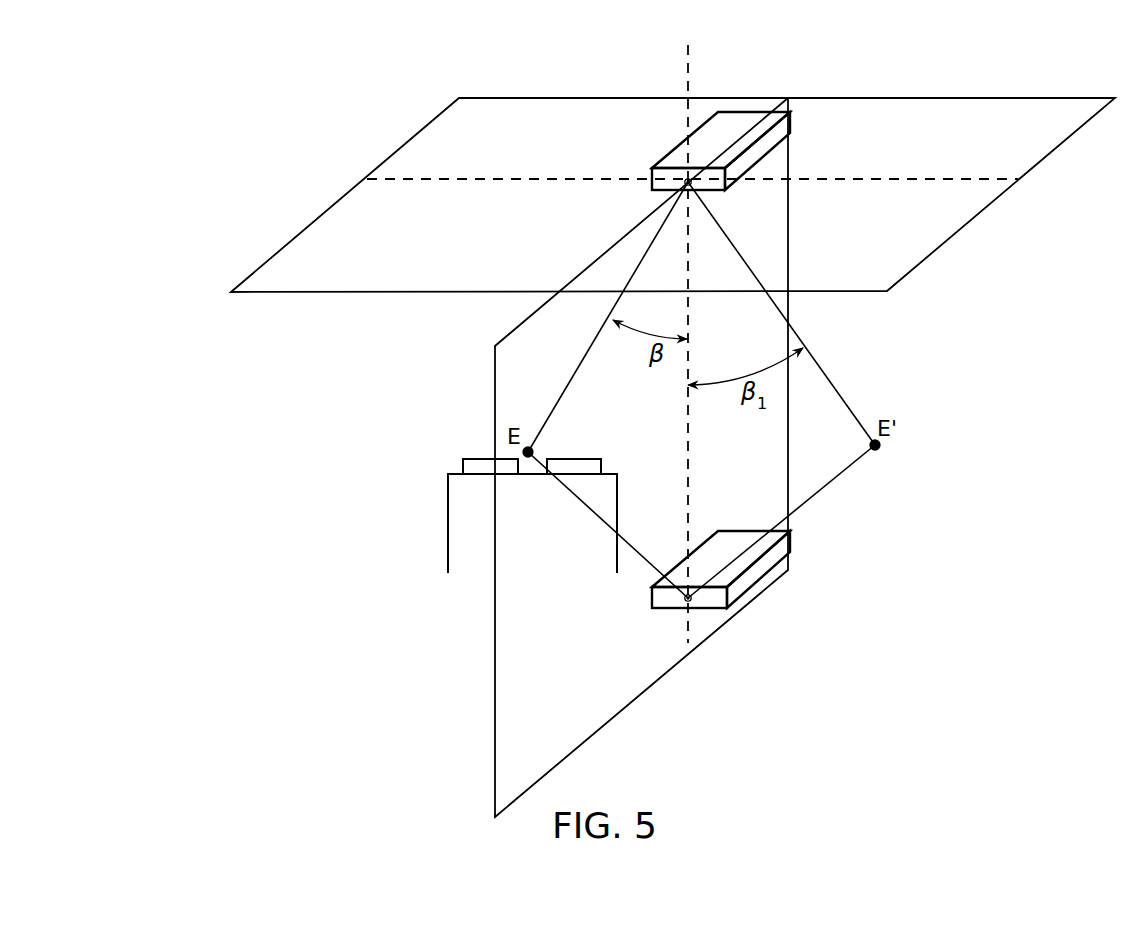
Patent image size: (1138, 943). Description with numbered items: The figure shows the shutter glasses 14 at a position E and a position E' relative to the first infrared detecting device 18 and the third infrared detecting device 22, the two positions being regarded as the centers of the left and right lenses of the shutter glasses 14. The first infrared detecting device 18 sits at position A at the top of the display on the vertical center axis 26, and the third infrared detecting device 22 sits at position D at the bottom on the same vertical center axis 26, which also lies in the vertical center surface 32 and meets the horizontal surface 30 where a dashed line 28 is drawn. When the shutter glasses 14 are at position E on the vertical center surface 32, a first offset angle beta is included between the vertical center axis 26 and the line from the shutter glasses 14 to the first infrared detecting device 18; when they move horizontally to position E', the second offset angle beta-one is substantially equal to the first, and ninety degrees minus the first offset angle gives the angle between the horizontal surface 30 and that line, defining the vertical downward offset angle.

The shutter glasses 14 is at (440, 534).
The first infrared detecting device 18 is at (740, 118).
The third infrared detecting device 22 is at (793, 542).
The vertical center axis 26 is at (688, 65).
The reference line 28 is at (970, 180).
The horizontal surface 30 is at (1045, 158).
The vertical center surface 32 is at (715, 635).